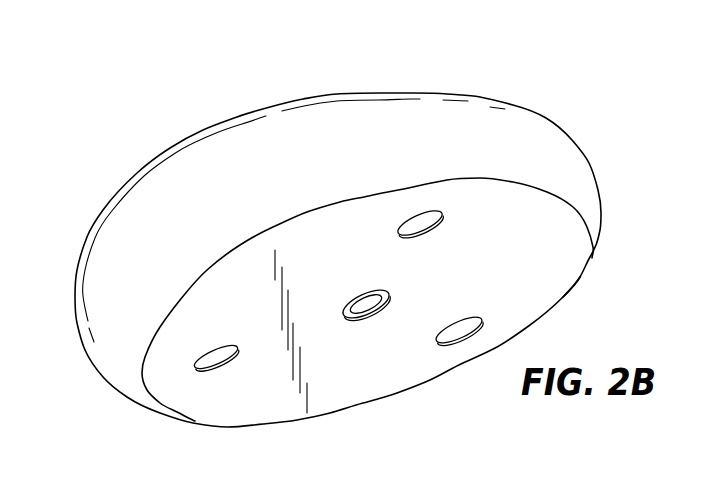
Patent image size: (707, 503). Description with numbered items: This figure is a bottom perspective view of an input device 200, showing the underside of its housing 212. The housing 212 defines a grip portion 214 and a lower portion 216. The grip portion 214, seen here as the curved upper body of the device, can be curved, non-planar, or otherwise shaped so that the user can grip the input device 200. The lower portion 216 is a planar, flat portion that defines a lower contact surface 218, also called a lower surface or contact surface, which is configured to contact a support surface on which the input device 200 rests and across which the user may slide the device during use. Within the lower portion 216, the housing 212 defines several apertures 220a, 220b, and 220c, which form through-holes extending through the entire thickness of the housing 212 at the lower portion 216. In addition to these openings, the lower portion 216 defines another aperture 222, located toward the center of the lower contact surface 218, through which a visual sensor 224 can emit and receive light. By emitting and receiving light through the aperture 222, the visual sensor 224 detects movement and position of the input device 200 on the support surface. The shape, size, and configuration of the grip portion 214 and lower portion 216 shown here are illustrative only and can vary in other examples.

The input device 200 is at (84, 200).
The housing 212 is at (392, 108).
The grip portion 214 is at (473, 110).
The lower portion 216 is at (560, 286).
The lower contact surface 218 is at (393, 383).
The aperture 220a is at (217, 371).
The aperture 220b is at (449, 328).
The aperture 220c is at (432, 228).
The aperture 222 is at (343, 320).
The visual sensor 224 is at (361, 304).